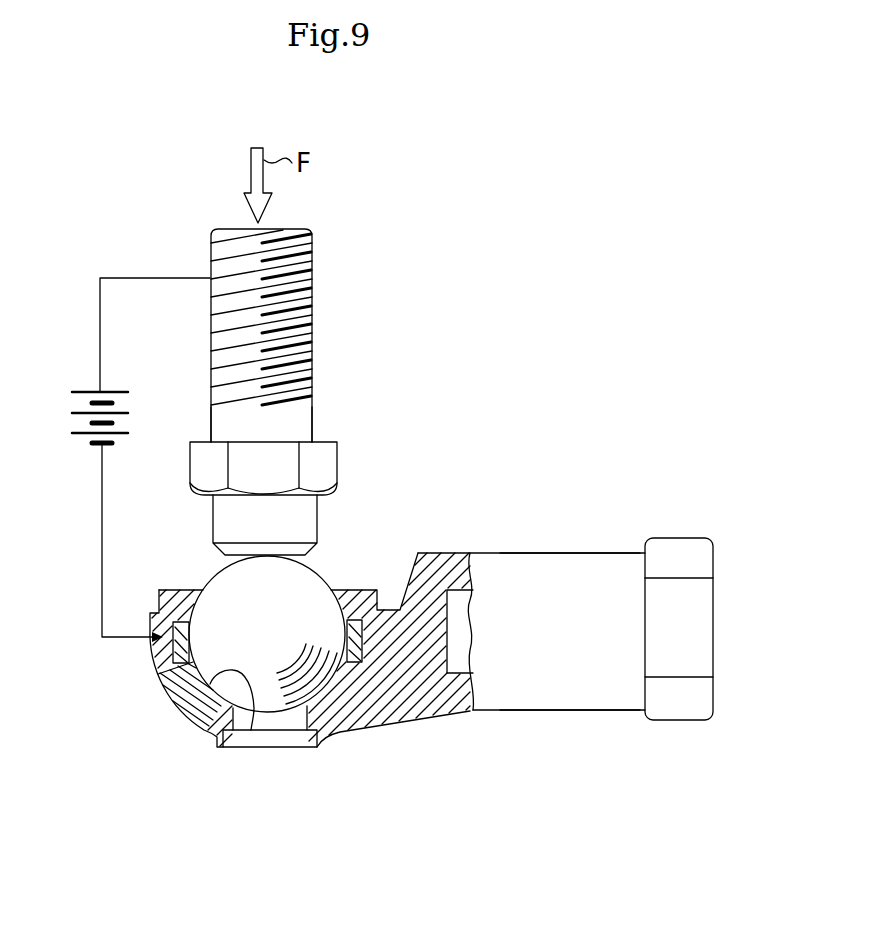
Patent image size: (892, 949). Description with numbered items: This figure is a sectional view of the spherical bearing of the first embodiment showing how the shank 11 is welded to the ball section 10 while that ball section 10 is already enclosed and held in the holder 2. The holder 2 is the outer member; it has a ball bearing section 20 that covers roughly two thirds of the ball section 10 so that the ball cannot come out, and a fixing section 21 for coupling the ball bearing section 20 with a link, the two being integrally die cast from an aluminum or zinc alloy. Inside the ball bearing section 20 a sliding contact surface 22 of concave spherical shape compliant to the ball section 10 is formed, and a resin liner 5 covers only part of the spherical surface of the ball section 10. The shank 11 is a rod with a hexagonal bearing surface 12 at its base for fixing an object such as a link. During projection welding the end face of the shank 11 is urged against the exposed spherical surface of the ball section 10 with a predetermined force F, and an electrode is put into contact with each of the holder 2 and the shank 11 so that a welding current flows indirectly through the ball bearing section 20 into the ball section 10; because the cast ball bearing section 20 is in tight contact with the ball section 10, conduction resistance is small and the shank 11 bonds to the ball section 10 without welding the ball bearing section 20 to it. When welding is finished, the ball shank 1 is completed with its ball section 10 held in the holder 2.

The ball shank 1 is at (319, 311).
The shank 11 is at (311, 390).
The hexagonal bearing surface 12 is at (331, 464).
The ball section 10 is at (321, 578).
The resin liner 5 is at (162, 652).
The ball bearing section 20 is at (177, 688).
The sliding contact surface 22 is at (251, 730).
The holder 2 is at (548, 716).
The fixing section 21 is at (584, 560).